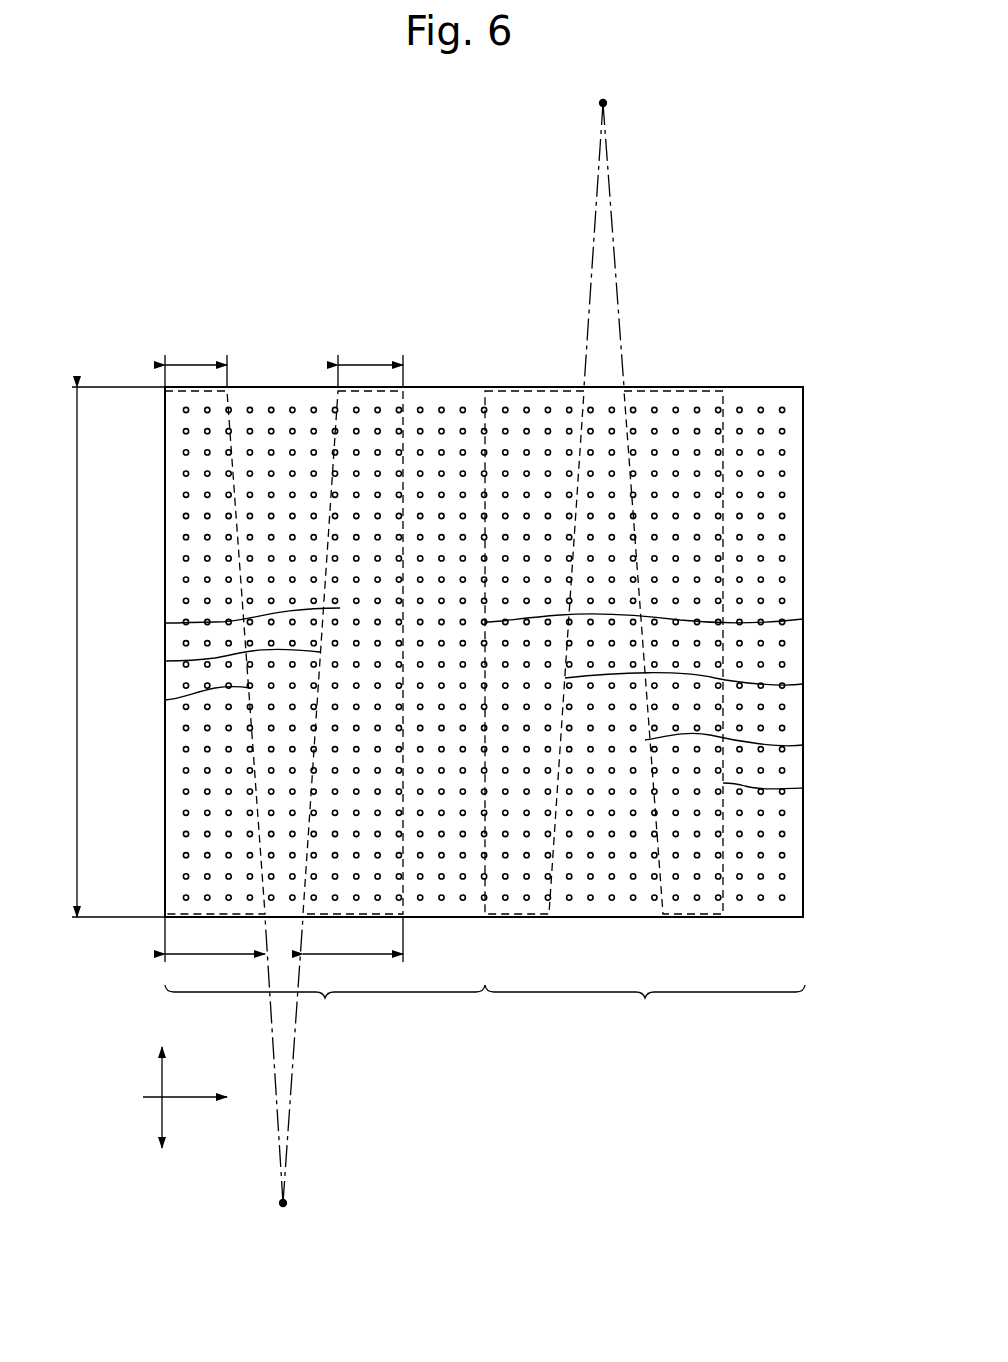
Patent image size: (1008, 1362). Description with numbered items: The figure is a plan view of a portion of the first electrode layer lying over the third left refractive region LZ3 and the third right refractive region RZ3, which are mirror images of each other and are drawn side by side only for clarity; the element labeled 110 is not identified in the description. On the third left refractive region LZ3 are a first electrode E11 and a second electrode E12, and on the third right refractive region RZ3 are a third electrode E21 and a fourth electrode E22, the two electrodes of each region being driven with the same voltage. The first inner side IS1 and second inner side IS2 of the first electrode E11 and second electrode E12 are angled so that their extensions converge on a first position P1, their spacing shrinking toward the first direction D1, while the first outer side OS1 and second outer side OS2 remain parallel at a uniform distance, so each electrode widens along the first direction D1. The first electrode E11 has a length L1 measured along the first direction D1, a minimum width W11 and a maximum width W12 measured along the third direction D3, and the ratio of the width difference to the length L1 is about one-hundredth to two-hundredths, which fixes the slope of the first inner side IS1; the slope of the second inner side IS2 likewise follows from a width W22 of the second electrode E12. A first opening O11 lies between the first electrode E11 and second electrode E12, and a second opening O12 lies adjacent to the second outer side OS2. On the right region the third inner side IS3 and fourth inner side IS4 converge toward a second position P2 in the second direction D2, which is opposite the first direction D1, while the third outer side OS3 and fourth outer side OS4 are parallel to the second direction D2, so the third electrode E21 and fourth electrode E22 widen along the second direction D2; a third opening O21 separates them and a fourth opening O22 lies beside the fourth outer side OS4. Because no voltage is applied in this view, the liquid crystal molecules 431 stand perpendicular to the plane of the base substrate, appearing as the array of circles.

The display panel 110 is at (803, 845).
The liquid crystal molecules 431 is at (785, 515).
The first electrode E11 is at (213, 391).
The second electrode E12 is at (388, 391).
The third electrode E21 is at (540, 391).
The fourth electrode E22 is at (680, 391).
The first opening O11 is at (284, 401).
The second opening O12 is at (446, 401).
The third opening O21 is at (610, 401).
The fourth opening O22 is at (767, 401).
The minimum width of first electrode W11 is at (196, 363).
The maximum width of first electrode W12 is at (284, 658).
The width of second electrode W22 is at (353, 965).
The length of first electrode L1 is at (106, 652).
The first outer side OS1 is at (165, 733).
The second outer side OS2 is at (165, 623).
The third outer side OS3 is at (803, 619).
The fourth outer side OS4 is at (803, 788).
The first inner side IS1 is at (165, 700).
The second inner side IS2 is at (165, 661).
The third inner side IS3 is at (803, 684).
The fourth inner side IS4 is at (803, 745).
The first position P1 is at (287, 1203).
The second position P2 is at (607, 103).
The third left refractive region LZ3 is at (325, 1003).
The third right refractive region RZ3 is at (645, 1003).
The first direction D1 is at (164, 1136).
The second direction D2 is at (164, 1059).
The third direction D3 is at (200, 1098).